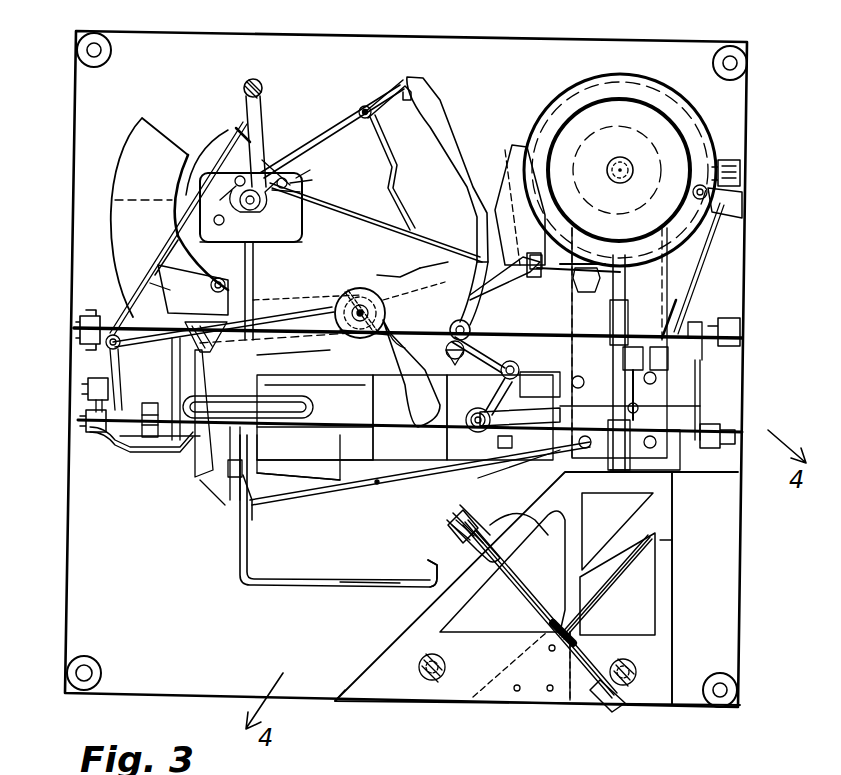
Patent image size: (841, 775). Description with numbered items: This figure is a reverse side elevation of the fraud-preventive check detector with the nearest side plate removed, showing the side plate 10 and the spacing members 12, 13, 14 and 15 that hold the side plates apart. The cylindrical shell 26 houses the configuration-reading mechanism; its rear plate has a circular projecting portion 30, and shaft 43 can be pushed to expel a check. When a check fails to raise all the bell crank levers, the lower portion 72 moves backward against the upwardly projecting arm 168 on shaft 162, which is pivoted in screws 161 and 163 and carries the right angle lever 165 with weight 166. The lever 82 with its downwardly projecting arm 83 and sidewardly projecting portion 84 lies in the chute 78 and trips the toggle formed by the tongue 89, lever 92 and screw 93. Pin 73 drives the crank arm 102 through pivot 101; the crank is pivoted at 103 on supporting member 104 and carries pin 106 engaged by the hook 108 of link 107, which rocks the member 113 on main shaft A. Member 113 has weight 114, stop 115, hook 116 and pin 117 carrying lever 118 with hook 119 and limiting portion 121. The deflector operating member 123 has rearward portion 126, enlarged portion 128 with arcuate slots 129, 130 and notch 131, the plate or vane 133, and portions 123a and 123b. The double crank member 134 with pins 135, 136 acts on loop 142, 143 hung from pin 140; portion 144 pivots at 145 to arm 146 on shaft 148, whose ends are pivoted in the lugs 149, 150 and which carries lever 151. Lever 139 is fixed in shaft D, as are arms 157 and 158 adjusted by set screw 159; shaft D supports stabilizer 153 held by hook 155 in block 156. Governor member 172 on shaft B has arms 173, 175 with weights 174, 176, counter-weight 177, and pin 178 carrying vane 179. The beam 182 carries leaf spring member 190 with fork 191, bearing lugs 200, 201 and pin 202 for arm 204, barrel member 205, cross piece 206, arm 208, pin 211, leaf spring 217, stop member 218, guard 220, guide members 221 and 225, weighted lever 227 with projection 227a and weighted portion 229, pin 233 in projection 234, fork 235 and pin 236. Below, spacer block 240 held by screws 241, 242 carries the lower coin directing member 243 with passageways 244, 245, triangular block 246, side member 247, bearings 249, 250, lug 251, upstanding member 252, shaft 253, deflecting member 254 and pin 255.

The side plate 10 is at (430, 40).
The spacing member 12 is at (105, 42).
The spacing member 13 is at (740, 35).
The spacing member 14 is at (735, 682).
The spacing member 15 is at (96, 662).
The cylindrical shell 26 is at (620, 75).
The circular projecting portion 30 is at (625, 108).
The shaft 43 is at (627, 160).
The lower portion of circular member 72 is at (630, 302).
The pin 73 is at (628, 284).
The chute 78 is at (665, 290).
The lever 82 is at (746, 206).
The downwardly projecting arm 83 is at (706, 258).
The sidewardly projecting portion 84 is at (694, 320).
The tongue 89 is at (728, 160).
The lever 92 is at (740, 160).
The screw 93 is at (740, 170).
The pivot 101 is at (600, 262).
The crank arm 102 is at (556, 285).
The pivot 103 is at (578, 288).
The supporting member 104 is at (565, 220).
The pin 106 is at (528, 266).
The link 107 is at (422, 248).
The hook 108 is at (512, 244).
The member 113 is at (445, 120).
The weight 114 is at (190, 272).
The stop 115 is at (166, 283).
The hook 116 is at (472, 324).
The pin 117 is at (350, 105).
The lever 118 is at (402, 185).
The hook 119 is at (320, 178).
The laterally projecting portion 121 is at (130, 160).
The deflector operating member 123 is at (248, 556).
The forwardly projecting portion 123a is at (345, 568).
The upwardly projecting portion 123b is at (408, 575).
The rearwardly projecting portion 126 is at (212, 150).
The enlarged portion 128 is at (310, 398).
The arcuate slot 129 is at (220, 352).
The enlarged arcuate slot 130 is at (300, 378).
The notch 131 is at (272, 390).
The plate or vane 133 is at (255, 506).
The double crank member 134 is at (300, 218).
The pin 135 is at (310, 182).
The pin 136 is at (258, 222).
The lever 139 is at (175, 240).
The pin 140 is at (264, 88).
The loop 142 is at (268, 120).
The enlarged loop portion 143 is at (318, 200).
The portion 144 is at (257, 272).
The pivot 145 is at (318, 322).
The arm 146 is at (214, 292).
The shaft 148 is at (515, 333).
The switch 149 is at (718, 316).
The bolt 150 is at (96, 318).
The lever 151 is at (702, 374).
The stabilizer 153 is at (150, 442).
The hook 155 is at (195, 440).
The block 156 is at (100, 440).
The projecting arm 157 is at (132, 352).
The downwardly projecting arm 158 is at (124, 380).
The set screw 159 is at (88, 388).
The screw 161 is at (86, 420).
The shaft 162 is at (715, 416).
The screw 163 is at (710, 450).
The right angle lever 165 is at (110, 370).
The weight 166 is at (147, 402).
The upwardly projecting arm 168 is at (628, 340).
The governor member 172 is at (362, 274).
The arm 173 is at (440, 290).
The weight 174 is at (515, 180).
The arm 175 is at (280, 314).
The weight 176 is at (222, 485).
The counter-weight 177 is at (356, 362).
The pin 178 is at (430, 346).
The vane 179 is at (420, 300).
The beam 182 is at (296, 462).
The leaf spring member 190 is at (544, 410).
The fork 191 is at (612, 375).
The bearing lug 200 is at (285, 348).
The bearing lug 201 is at (280, 455).
The pin or shaft 202 is at (262, 366).
The arm 204 is at (330, 462).
The barrel member 205 is at (200, 514).
The cross piece 206 is at (440, 448).
The arm 208 is at (690, 404).
The pin 211 is at (668, 384).
The leaf spring / guide member 217 is at (350, 440).
The stop member 218 is at (350, 495).
The guard 220 is at (380, 486).
The guide member 221 is at (692, 470).
The guide member 225 is at (498, 350).
The weighted lever 227 is at (705, 355).
The projection 227a is at (520, 484).
The weighted portion 229 is at (505, 428).
The pin 233 is at (518, 366).
The projection 234 is at (545, 392).
The fork 235 is at (480, 362).
The pin 236 is at (488, 392).
The spacer block 240 is at (654, 710).
The screw 241 is at (640, 662).
The screw 242 is at (418, 668).
The lower coin directing member 243 is at (676, 514).
The vertically disposed passageway 244 is at (640, 612).
The angularly disposed passageway 245 is at (540, 705).
The triangular shaped block 246 is at (538, 704).
The side member 247 is at (672, 550).
The bearing member 249 is at (606, 712).
The bearing member 250 is at (448, 524).
The lug 251 is at (478, 516).
The upstanding member 252 is at (520, 540).
The shaft 253 is at (590, 665).
The deflecting member 254 is at (604, 582).
The pin 255 is at (633, 530).
The main shaft A is at (230, 128).
The shaft B is at (398, 275).
The shaft D is at (75, 340).